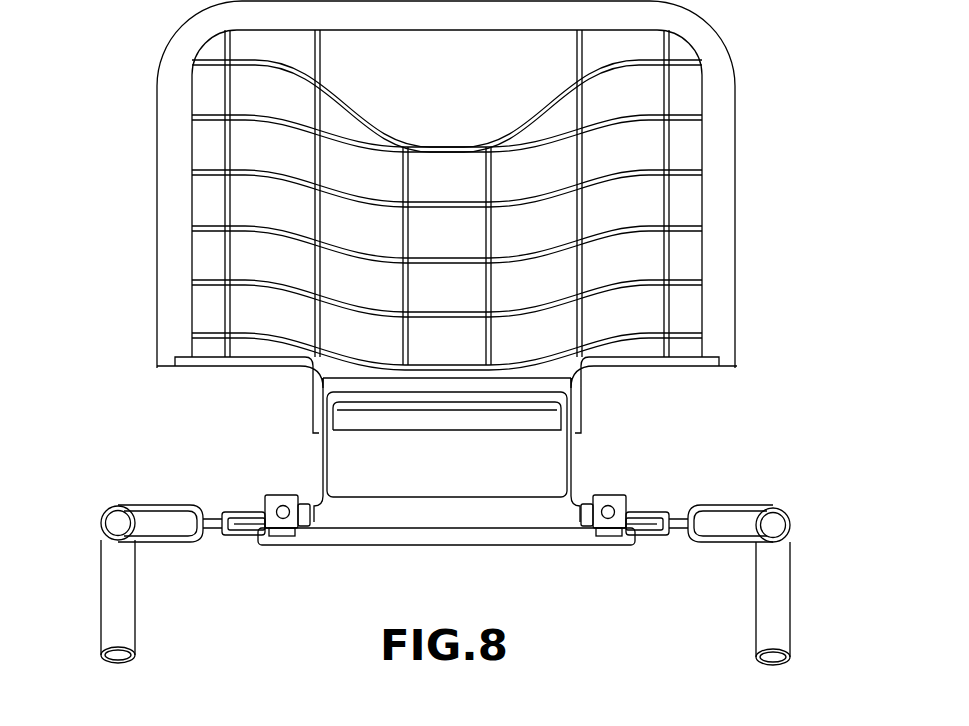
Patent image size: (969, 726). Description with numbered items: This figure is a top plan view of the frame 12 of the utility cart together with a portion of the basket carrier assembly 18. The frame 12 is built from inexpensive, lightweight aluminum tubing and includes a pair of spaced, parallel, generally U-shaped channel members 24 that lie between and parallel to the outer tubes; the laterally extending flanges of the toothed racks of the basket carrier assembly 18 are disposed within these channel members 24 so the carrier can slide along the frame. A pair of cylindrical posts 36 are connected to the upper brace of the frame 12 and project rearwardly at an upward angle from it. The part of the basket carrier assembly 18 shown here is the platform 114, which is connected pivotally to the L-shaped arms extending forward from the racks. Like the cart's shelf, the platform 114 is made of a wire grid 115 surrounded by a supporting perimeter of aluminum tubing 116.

The frame 12 is at (740, 477).
The basket carrier assembly 18 is at (768, 292).
The U-shaped channel members 24 is at (638, 500).
The cylindrical posts 36 is at (108, 600).
The platform 114 is at (178, 245).
The wire grid 115 is at (225, 193).
The aluminum tubing 116 is at (157, 125).